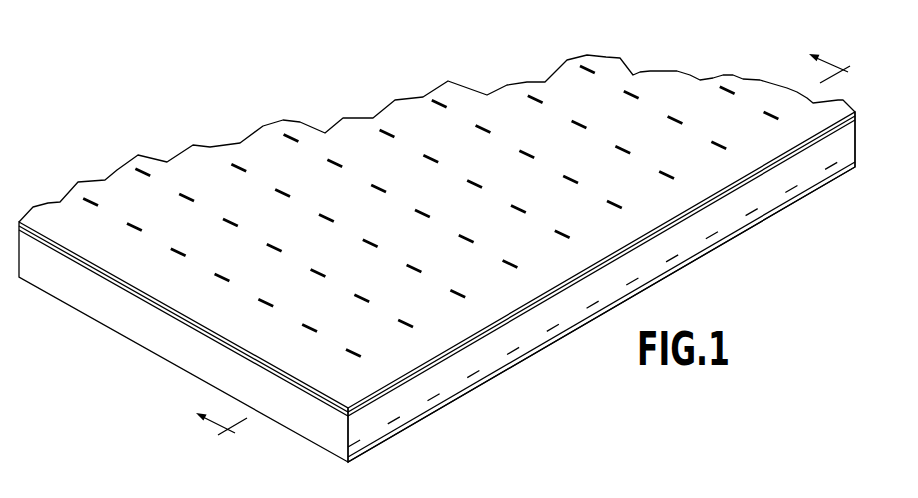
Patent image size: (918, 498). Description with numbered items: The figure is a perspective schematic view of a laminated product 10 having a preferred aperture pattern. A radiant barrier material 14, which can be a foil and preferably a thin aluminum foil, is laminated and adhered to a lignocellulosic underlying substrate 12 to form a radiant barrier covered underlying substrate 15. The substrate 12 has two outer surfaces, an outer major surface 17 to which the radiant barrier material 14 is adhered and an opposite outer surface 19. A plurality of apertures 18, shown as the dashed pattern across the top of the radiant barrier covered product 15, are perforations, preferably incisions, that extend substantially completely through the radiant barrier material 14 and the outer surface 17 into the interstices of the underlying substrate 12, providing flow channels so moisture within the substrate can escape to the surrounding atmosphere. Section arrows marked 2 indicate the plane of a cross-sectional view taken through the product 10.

The laminated product 10 is at (437, 244).
The lignocellulosic substrate 12 is at (510, 328).
The radiant barrier material 14 is at (190, 290).
The radiant barrier covered underlying substrate 15 is at (743, 205).
The outer surface 17 is at (455, 352).
The apertures 18 is at (190, 194).
The outer surface 19 is at (482, 385).
The section line 2- 2 is at (522, 255).